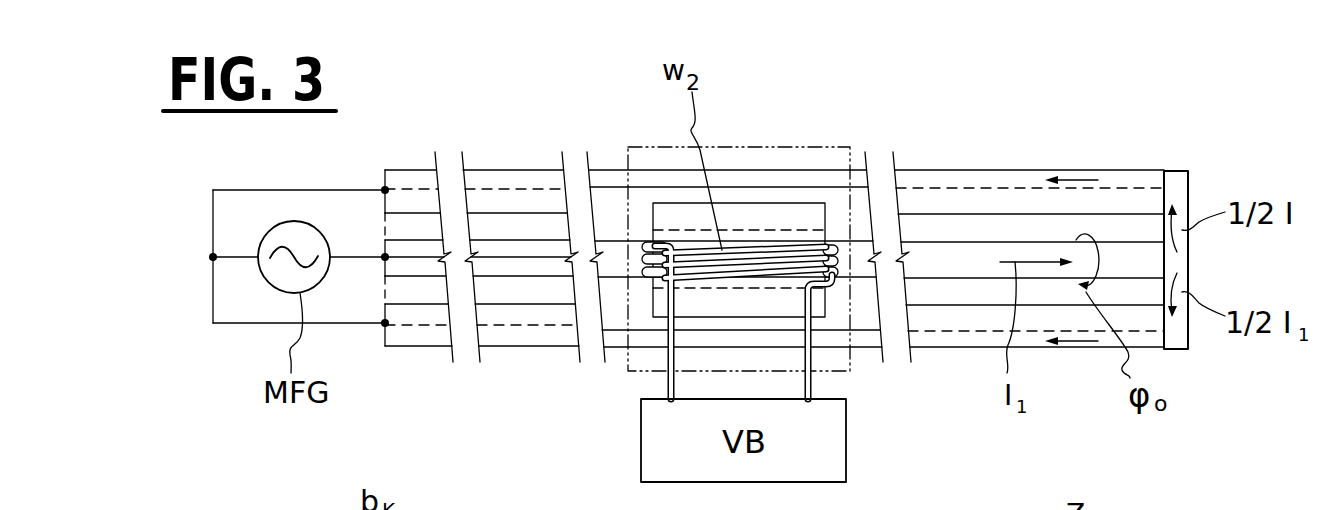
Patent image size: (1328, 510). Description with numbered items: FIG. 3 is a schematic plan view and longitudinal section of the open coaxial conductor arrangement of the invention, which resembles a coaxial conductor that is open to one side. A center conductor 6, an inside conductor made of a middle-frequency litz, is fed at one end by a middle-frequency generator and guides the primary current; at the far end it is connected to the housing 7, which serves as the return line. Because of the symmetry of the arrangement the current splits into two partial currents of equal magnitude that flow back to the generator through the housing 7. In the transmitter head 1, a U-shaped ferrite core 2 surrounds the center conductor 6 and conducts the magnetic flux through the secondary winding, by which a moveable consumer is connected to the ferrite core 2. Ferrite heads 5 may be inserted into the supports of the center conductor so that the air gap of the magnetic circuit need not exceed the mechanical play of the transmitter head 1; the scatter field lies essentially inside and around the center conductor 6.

The transmitter head 1 is at (762, 132).
The U-shaped ferrite core 2 is at (802, 213).
The ferrite heads 5 is at (945, 242).
The center conductor 6 is at (960, 262).
The housing 7 is at (518, 347).